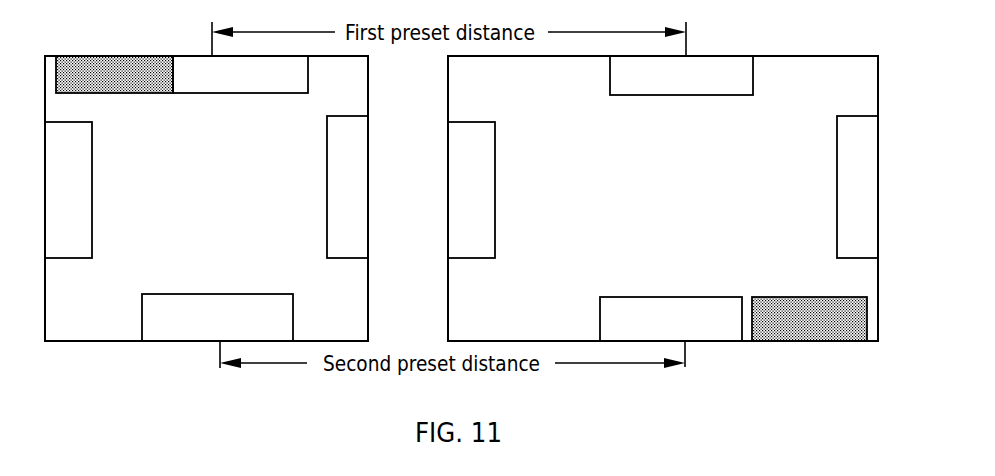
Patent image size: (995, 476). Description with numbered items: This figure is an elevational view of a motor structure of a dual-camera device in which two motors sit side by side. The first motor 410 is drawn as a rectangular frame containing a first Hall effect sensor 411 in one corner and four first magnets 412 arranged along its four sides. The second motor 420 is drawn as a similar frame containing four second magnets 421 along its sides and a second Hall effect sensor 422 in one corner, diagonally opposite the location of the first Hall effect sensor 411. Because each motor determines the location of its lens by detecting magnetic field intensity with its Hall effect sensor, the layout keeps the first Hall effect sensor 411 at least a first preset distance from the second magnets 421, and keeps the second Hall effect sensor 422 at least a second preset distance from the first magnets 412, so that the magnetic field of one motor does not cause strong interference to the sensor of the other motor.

The first motor 410 is at (206, 198).
The first Hall effect sensor 411 is at (114, 74).
The first magnets 412 is at (206, 198).
The second motor 420 is at (663, 198).
The second magnets 421 is at (663, 198).
The second Hall effect sensor 422 is at (809, 319).